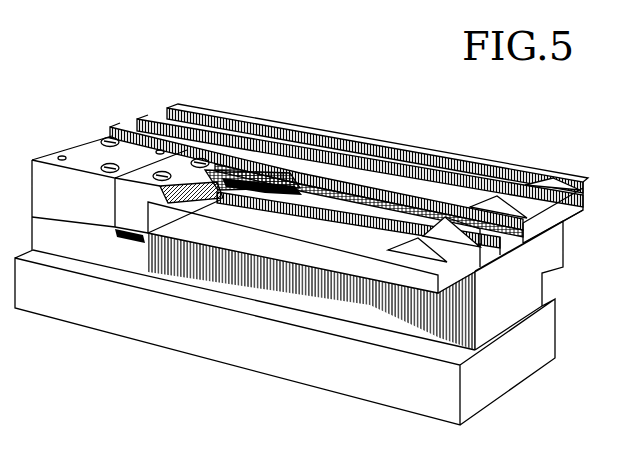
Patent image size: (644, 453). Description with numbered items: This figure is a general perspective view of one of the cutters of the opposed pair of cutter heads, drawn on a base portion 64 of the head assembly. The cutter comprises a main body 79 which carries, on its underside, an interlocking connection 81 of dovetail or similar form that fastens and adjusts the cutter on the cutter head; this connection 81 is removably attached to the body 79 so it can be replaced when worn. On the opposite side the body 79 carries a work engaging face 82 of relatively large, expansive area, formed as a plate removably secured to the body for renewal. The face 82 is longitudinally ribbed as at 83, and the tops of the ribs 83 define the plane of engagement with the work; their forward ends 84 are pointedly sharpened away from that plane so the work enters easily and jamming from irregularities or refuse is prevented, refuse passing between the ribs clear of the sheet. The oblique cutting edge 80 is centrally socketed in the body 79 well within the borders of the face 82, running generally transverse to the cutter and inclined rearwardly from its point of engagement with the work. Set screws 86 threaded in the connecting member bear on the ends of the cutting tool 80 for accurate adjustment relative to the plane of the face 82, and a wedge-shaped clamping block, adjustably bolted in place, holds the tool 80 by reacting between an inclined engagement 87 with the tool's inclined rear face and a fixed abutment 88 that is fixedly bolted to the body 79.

The base plate 64 is at (285, 337).
The main body 79 is at (365, 280).
The oblique cutting edge 80 is at (262, 170).
The interlocking connection 81 is at (390, 345).
The work engaging face 82 is at (438, 170).
The ribs 83 is at (368, 140).
The forward ends of ribs 84 is at (553, 186).
The set screws 86 is at (185, 160).
The inclined engagement 87 is at (230, 172).
The fixed abutment 88 is at (137, 168).